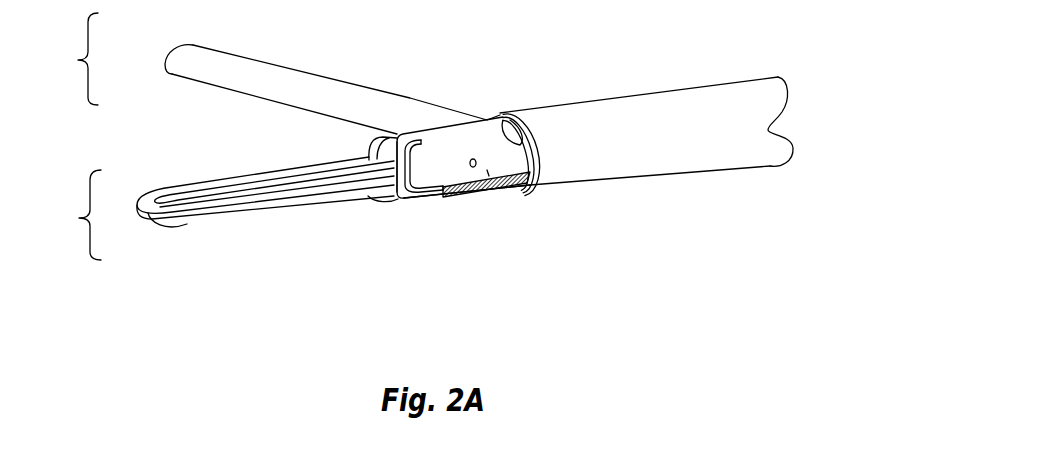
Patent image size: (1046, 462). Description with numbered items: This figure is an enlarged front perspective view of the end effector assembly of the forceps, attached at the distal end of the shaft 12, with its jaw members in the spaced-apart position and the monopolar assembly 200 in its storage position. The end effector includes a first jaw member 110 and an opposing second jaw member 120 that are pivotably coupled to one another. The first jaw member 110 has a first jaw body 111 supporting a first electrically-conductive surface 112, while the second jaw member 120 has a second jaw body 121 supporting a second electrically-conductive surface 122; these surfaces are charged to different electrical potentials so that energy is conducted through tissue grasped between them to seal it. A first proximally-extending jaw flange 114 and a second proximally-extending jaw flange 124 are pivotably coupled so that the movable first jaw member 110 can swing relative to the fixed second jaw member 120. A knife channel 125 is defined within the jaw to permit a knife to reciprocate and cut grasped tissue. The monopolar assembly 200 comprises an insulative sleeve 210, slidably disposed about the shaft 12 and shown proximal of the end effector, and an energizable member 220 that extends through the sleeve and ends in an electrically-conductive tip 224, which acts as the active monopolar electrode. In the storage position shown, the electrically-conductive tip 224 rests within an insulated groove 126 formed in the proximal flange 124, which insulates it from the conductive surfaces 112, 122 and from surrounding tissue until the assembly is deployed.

The first jaw member 110 is at (74, 59).
The first jaw body 111 is at (305, 93).
The first electrically-conductive surface 112 is at (207, 86).
The second jaw member 120 is at (75, 215).
The second jaw body 121 is at (279, 205).
The second electrically-conductive surface 122 is at (187, 214).
The knife channel 125 is at (214, 186).
The insulated groove 126 is at (426, 145).
The first proximally-extending jaw flange 114 is at (464, 121).
The shaft 12 is at (500, 118).
The energizable member 220 is at (450, 193).
The electrically-conductive tip 224 is at (398, 201).
The second proximally-extending jaw flange 124 is at (486, 190).
The monopolar assembly 200 is at (508, 200).
The insulative sleeve 210 is at (677, 166).